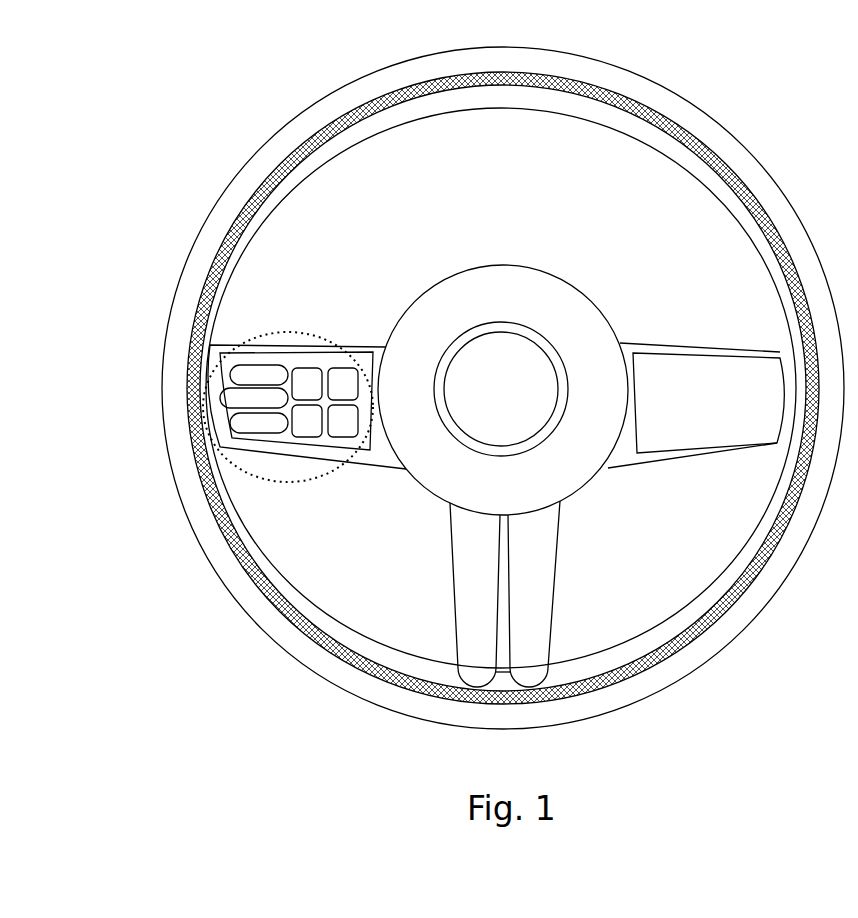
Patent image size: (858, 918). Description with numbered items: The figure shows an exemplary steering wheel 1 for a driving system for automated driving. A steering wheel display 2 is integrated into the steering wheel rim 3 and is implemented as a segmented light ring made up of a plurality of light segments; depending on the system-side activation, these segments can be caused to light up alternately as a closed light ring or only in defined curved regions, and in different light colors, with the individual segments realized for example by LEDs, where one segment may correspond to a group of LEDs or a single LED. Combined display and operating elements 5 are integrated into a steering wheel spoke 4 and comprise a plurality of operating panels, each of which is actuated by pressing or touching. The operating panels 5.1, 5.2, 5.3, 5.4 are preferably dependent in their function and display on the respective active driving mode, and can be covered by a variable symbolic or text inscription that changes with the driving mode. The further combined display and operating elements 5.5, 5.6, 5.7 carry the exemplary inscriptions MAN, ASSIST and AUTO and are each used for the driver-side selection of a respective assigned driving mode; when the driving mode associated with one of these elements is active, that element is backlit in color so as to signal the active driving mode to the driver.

The steering wheel 1 is at (158, 74).
The steering wheel display 2 is at (209, 266).
The steering wheel rim 3 is at (237, 175).
The steering wheel spoke 4 is at (363, 343).
The combined display and operating elements 5 is at (243, 343).
The operating panel 5.1 is at (305, 372).
The operating panel 5.2 is at (345, 372).
The operating panel 5.3 is at (312, 427).
The operating panel 5.4 is at (345, 423).
The operating element with inscription MAN 5.5 is at (228, 423).
The operating element with inscription ASSIST 5.6 is at (218, 397).
The operating element with inscription AUTO 5.7 is at (220, 375).